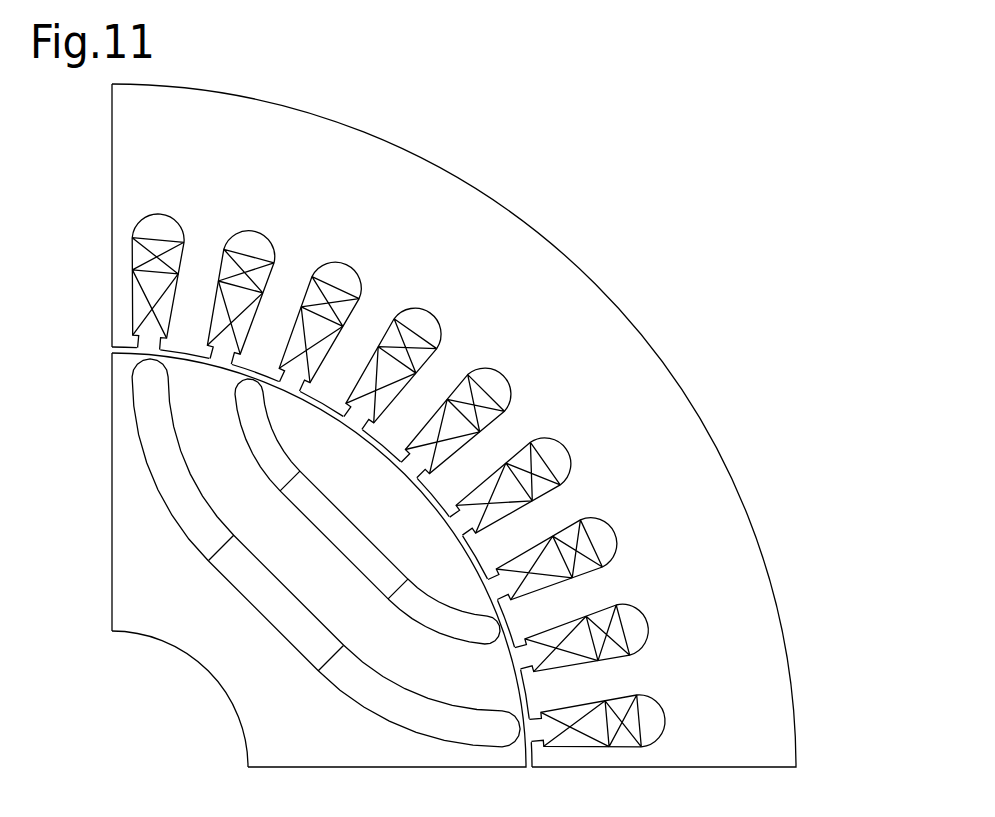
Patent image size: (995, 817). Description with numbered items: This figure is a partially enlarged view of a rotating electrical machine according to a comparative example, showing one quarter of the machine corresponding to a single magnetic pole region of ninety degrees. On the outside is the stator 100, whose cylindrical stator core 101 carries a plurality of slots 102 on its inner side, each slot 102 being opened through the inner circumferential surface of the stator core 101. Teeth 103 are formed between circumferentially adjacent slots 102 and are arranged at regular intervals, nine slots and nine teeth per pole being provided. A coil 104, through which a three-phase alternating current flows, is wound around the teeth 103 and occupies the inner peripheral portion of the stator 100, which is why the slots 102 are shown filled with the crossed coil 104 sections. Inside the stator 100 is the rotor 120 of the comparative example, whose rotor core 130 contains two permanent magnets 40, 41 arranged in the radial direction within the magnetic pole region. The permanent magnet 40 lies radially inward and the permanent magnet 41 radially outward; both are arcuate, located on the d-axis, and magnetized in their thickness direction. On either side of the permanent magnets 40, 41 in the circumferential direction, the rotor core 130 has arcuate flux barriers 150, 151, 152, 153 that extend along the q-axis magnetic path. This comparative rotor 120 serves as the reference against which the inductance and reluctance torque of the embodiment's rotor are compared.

The stator 100 is at (787, 642).
The stator core 101 is at (763, 550).
The slot 102 is at (343, 270).
The tooth 103 is at (286, 289).
The coil 104 is at (407, 397).
The rotor 120 is at (203, 672).
The rotor core 130 is at (163, 630).
The flux barrier 150 is at (178, 492).
The flux barrier 151 is at (362, 690).
The flux barrier 152 is at (250, 433).
The flux barrier 153 is at (418, 612).
The permanent magnet 40 is at (268, 615).
The permanent magnet 41 is at (330, 545).